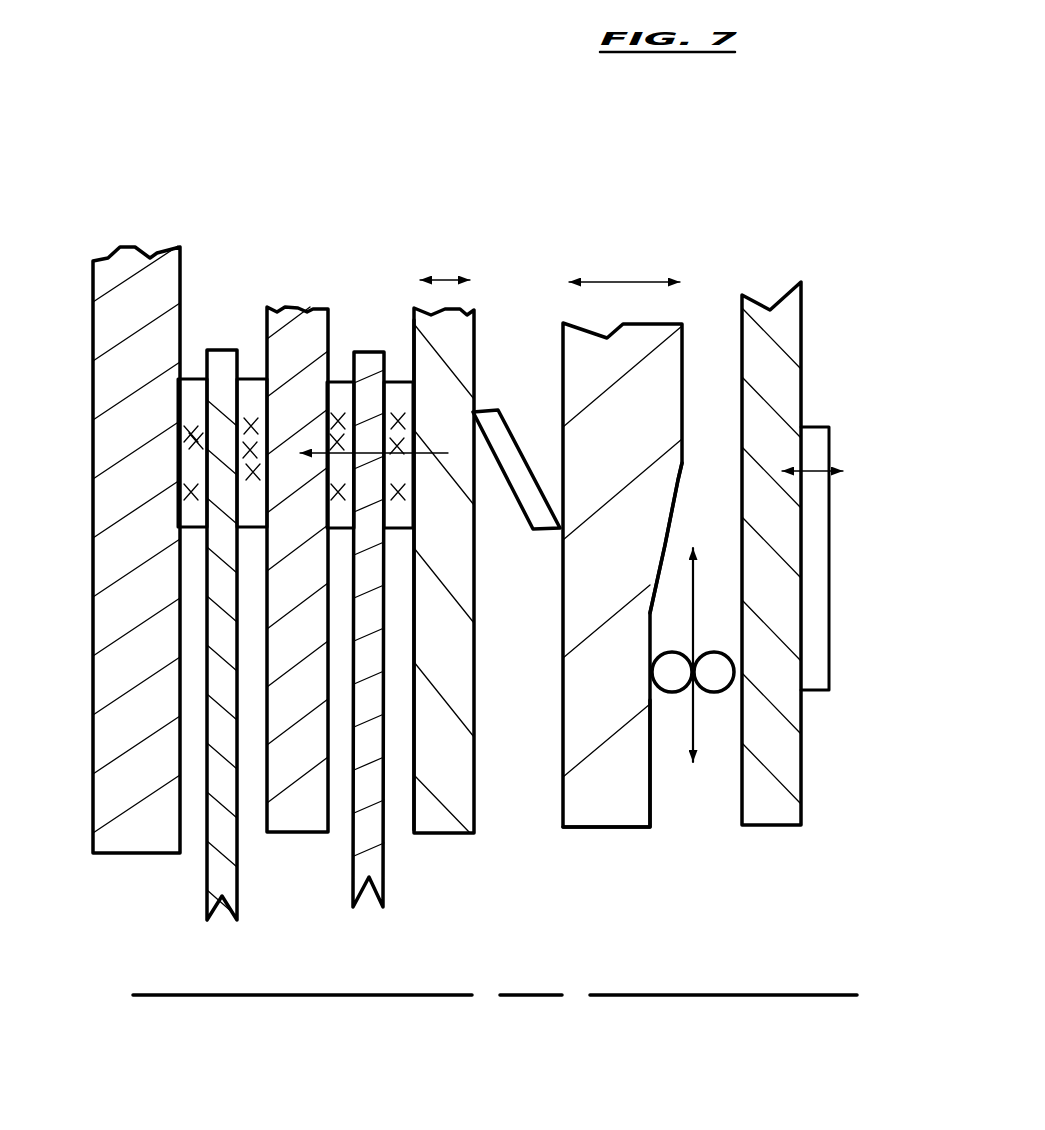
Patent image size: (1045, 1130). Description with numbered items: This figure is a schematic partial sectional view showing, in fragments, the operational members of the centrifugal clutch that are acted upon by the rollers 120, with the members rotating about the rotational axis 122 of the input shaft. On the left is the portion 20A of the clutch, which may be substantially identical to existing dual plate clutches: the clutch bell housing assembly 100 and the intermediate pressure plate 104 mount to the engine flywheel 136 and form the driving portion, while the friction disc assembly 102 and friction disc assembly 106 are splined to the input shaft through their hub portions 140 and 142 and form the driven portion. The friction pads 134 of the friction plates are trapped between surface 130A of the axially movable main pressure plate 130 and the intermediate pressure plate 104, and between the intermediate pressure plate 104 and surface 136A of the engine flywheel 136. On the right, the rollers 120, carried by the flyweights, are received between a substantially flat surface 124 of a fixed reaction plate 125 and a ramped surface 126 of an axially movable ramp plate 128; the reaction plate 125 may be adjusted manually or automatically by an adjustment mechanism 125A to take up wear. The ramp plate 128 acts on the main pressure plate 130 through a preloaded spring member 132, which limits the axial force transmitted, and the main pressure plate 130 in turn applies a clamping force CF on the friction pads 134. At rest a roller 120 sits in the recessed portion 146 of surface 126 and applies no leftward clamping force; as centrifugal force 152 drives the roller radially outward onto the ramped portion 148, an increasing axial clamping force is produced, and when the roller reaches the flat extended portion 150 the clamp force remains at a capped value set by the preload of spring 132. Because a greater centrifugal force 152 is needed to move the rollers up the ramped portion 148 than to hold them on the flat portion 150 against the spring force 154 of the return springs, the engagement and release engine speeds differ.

The portion of clutch 20A is at (477, 115).
The clutch bell housing assembly 100 is at (506, 205).
The friction disc assembly 102 is at (373, 232).
The intermediate pressure plate 104 is at (283, 352).
The friction disc assembly 106 is at (227, 232).
The roller 120 is at (722, 683).
The rotational axis 122 is at (412, 1002).
The flat surface 124 is at (737, 357).
The fixed reaction plate 125 is at (772, 373).
The adjustment mechanism 125A is at (813, 573).
The ramped surface 126 is at (653, 778).
The ramp plate 128 is at (620, 248).
The main pressure plate 130 is at (443, 748).
The surface of main pressure plate 130A is at (412, 573).
The preloaded spring member 132 is at (497, 433).
The friction pads 134 is at (252, 387).
The engine flywheel 136 is at (135, 495).
The surface of engine flywheel 136A is at (183, 280).
The hub portion 140 is at (369, 790).
The hub portion 142 is at (223, 790).
The recessed portion 146 is at (647, 637).
The ramped portion 148 is at (662, 550).
The flat extended portion 150 is at (678, 389).
The centrifugal force 152 is at (697, 590).
The spring force 154 is at (690, 738).
The clamping force CF is at (397, 457).